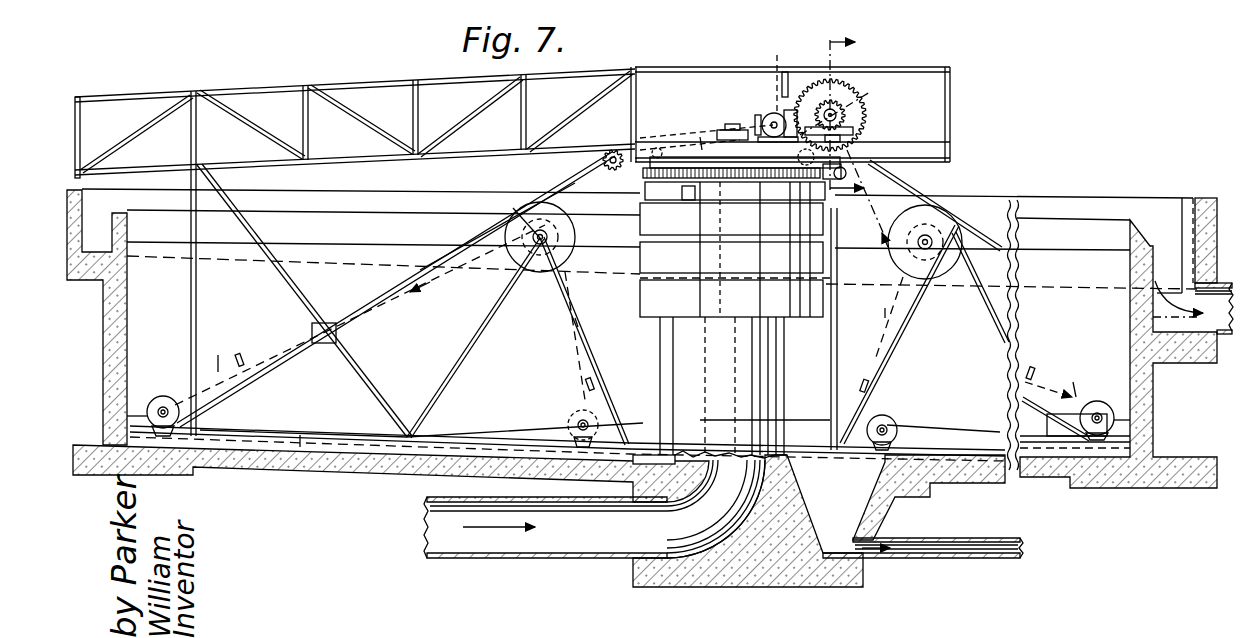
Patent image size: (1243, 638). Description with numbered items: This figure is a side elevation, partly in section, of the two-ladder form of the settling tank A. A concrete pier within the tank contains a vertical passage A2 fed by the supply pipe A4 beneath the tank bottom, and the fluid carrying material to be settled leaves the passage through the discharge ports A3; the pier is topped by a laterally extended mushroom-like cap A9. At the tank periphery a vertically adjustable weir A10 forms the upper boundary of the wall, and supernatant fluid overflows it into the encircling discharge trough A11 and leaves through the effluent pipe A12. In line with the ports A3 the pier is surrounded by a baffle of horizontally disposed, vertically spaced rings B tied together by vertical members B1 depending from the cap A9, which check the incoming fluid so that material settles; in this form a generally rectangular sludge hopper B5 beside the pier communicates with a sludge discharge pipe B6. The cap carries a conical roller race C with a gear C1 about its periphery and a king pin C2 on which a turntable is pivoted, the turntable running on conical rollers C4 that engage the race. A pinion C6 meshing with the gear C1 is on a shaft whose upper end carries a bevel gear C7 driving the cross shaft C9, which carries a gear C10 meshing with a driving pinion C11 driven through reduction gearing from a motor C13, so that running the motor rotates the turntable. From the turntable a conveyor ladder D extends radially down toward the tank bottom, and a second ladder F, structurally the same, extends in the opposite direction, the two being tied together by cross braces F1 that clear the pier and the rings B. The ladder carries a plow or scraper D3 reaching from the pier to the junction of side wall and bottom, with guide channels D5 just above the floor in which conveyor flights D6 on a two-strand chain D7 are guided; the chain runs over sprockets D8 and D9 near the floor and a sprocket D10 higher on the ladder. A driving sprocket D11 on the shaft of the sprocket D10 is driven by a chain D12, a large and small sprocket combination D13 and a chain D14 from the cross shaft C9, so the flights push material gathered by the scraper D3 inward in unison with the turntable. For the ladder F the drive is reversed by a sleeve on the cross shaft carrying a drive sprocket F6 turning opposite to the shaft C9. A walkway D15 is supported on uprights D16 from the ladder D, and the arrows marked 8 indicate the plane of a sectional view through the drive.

The settling tank A is at (107, 338).
The vertically disposed passage A2 is at (708, 375).
The discharge ports A3 is at (773, 300).
The supply pipe A4 is at (550, 545).
The mushroom like cap A9 is at (647, 190).
The weir A10 is at (132, 213).
The discharge trough A11 is at (651, 257).
The effluent discharge pipe A12 is at (1217, 357).
The rings B is at (653, 293).
The vertical members B1 is at (695, 193).
The sludge receiving hopper B5 is at (870, 512).
The sludge discharge pipe B6 is at (940, 552).
The conical roller race C is at (697, 160).
The gear C1 is at (683, 163).
The king pin C2 is at (728, 128).
The conical rollers C4 is at (656, 148).
The pinion C6 is at (846, 172).
The bevel gear C7 is at (853, 125).
The cross shaft C9 is at (840, 113).
The gear C10 is at (840, 85).
The driving pinion C11 is at (783, 74).
The motor C13 is at (768, 117).
The conveyor ladder D is at (292, 287).
The plow, scraper or screed D3 is at (227, 443).
The guide channels D5 is at (307, 427).
The conveyor flights D6 is at (242, 360).
The two-strand conveyor chain D7 is at (218, 355).
The sprocket D8 is at (577, 417).
The sprocket D9 is at (157, 395).
The sprocket D10 is at (578, 232).
The driving sprocket D11 is at (507, 277).
The chain D12 is at (570, 185).
The large and small sprocket combination D13 is at (603, 161).
The chain D14 is at (702, 130).
The walkway D15 is at (330, 152).
The upright D16 is at (197, 133).
The second ladder F is at (993, 338).
The cross braces F1 is at (720, 435).
The drive sprocket F6 is at (843, 107).
The section line 8 is at (855, 116).